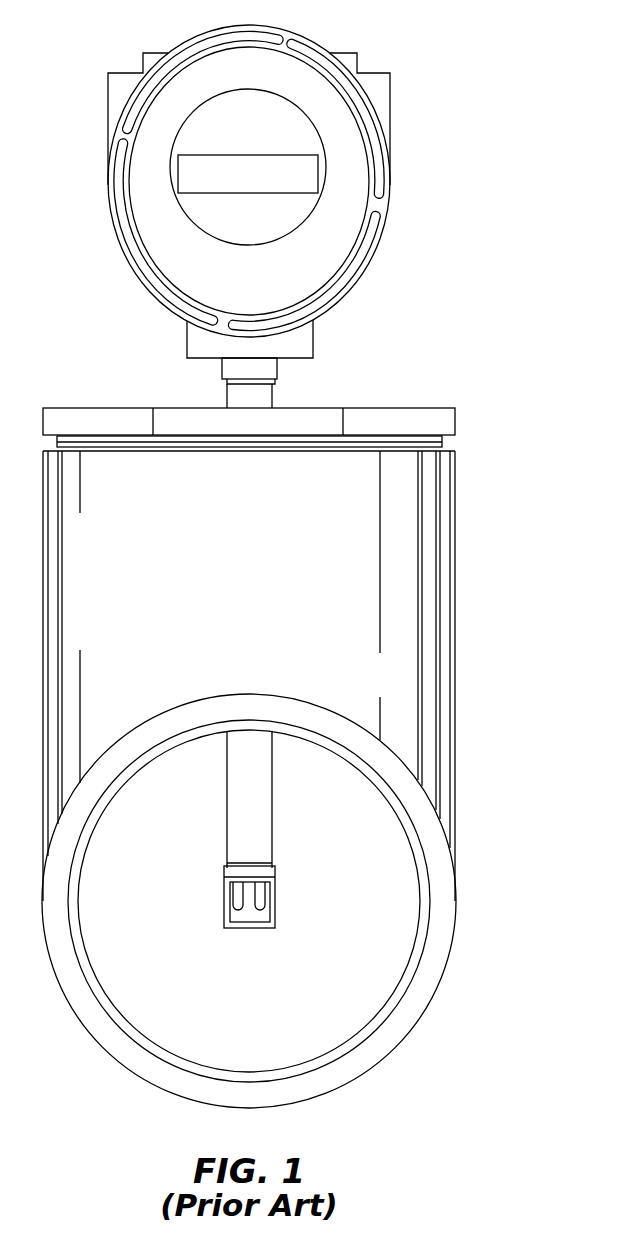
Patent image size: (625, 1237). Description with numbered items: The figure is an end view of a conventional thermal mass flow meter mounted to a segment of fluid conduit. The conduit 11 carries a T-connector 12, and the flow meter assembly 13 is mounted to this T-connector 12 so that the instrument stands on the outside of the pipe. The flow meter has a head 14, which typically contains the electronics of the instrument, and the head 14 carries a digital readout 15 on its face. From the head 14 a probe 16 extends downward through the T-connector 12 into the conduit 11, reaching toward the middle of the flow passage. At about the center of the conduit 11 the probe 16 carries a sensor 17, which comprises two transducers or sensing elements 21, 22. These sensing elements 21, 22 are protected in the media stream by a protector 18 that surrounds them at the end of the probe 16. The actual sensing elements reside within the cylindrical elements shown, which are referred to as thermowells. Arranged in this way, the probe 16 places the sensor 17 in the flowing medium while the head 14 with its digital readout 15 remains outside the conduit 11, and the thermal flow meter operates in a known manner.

The conduit 11 is at (448, 923).
The T-connector 12 is at (455, 562).
The flow meter assembly 13 is at (381, 37).
The head 14 is at (345, 128).
The digital readout 15 is at (317, 170).
The probe 16 is at (275, 400).
The sensor 17 is at (204, 862).
The protector 18 is at (276, 918).
The sensing element 21 is at (228, 897).
The sensing element 22 is at (270, 898).